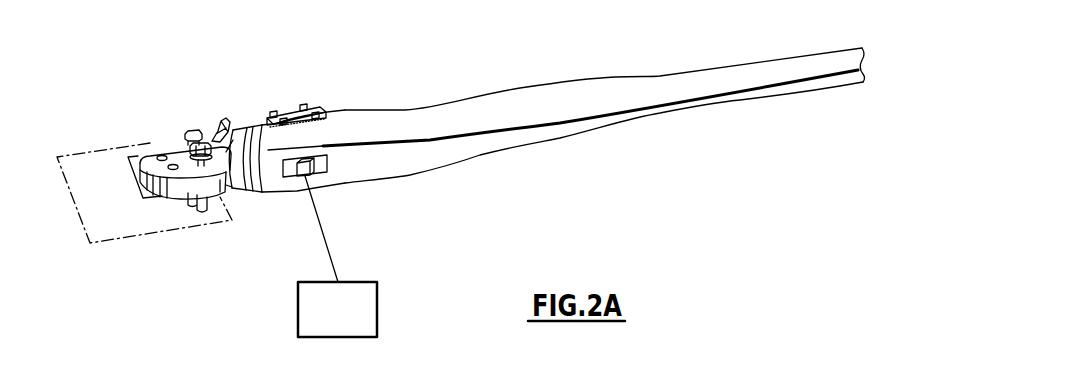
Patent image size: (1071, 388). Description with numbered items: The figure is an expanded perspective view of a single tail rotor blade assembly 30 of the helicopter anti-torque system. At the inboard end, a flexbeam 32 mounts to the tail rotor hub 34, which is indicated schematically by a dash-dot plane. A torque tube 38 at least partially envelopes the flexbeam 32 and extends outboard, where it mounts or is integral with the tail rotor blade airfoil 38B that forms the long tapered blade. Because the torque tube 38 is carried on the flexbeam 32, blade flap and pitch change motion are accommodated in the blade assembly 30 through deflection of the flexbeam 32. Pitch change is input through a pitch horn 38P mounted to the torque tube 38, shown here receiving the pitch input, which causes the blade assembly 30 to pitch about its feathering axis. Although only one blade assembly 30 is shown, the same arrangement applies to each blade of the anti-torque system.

The tail rotor blade assembly 30 is at (461, 174).
The flexbeam 32 is at (169, 190).
The tail rotor hub 34 is at (98, 228).
The torque tube 38 is at (317, 220).
The tail rotor blade airfoil 38B is at (757, 75).
The pitch horn 38P is at (313, 171).